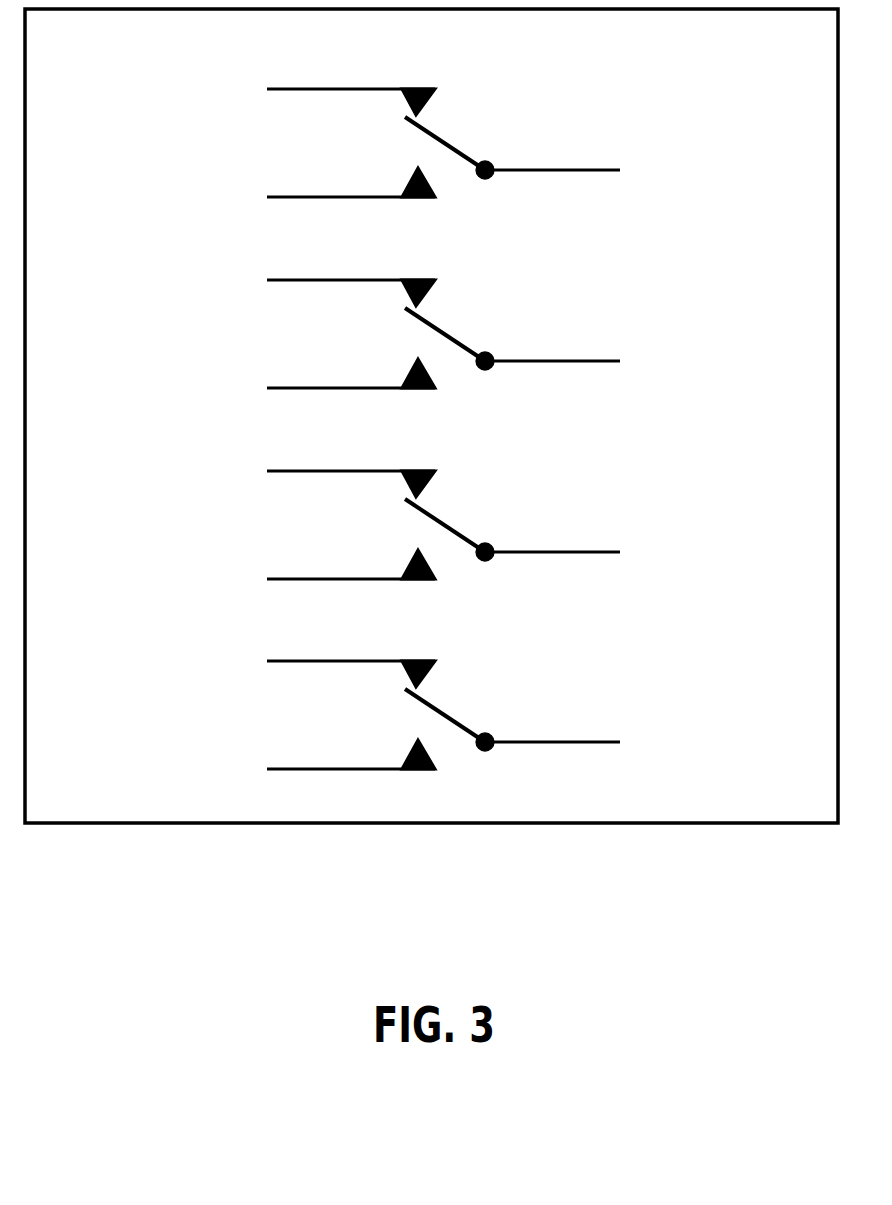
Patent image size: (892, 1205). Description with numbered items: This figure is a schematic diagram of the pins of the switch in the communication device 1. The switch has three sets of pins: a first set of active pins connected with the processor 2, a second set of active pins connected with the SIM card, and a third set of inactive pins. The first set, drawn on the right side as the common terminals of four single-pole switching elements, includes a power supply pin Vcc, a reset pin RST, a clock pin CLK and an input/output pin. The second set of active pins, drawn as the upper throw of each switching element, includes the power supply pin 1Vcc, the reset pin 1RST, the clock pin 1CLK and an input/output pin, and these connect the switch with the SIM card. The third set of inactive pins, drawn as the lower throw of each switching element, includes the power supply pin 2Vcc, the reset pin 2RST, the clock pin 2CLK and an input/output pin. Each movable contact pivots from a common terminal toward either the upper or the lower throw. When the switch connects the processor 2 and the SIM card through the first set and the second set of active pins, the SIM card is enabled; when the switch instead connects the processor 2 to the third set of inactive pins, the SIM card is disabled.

The first card contact set 1 is at (292, 372).
The processor 2 is at (292, 470).
The active power supply pin 1Vcc is at (296, 86).
The inactive power supply pin 2Vcc is at (296, 184).
The active reset pin 1RST is at (295, 276).
The inactive reset pin 2RST is at (292, 375).
The active clock pin 1CLK is at (292, 467).
The inactive clock pin 2CLK is at (292, 566).
The power supply pin Vcc is at (549, 148).
The reset pin RST is at (558, 339).
The clock pin CLK is at (559, 530).